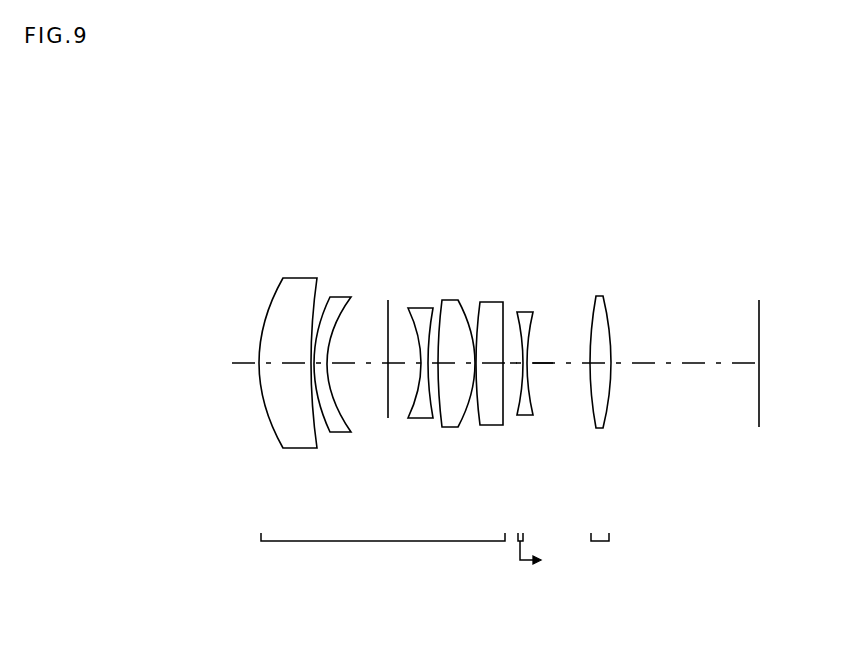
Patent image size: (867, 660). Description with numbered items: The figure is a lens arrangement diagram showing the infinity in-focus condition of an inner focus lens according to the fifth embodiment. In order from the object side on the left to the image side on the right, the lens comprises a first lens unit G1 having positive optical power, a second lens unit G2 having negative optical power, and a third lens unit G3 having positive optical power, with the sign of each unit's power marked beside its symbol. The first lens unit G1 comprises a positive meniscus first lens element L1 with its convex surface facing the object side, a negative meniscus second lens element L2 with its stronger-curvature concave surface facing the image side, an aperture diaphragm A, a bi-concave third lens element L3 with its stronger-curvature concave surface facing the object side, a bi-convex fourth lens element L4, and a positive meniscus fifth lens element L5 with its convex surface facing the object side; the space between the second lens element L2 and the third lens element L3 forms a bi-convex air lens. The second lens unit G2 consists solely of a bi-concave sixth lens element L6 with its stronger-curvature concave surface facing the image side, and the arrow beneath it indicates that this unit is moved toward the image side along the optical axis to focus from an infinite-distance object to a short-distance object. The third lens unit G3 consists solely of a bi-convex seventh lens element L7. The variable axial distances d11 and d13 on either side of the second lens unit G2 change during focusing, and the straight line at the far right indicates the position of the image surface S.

The first lens element L1 is at (300, 284).
The second lens element L2 is at (340, 300).
The aperture diaphragm A is at (388, 300).
The third lens element L3 is at (420, 312).
The fourth lens element L4 is at (452, 303).
The fifth lens element L5 is at (491, 305).
The sixth lens element L6 is at (523, 315).
The seventh lens element L7 is at (598, 296).
The image surface S is at (759, 333).
The axial distance d11 is at (510, 367).
The axial distance d13 is at (553, 366).
The first lens unit G1 is at (383, 526).
The second lens unit G2 is at (519, 538).
The third lens unit G3 is at (599, 526).